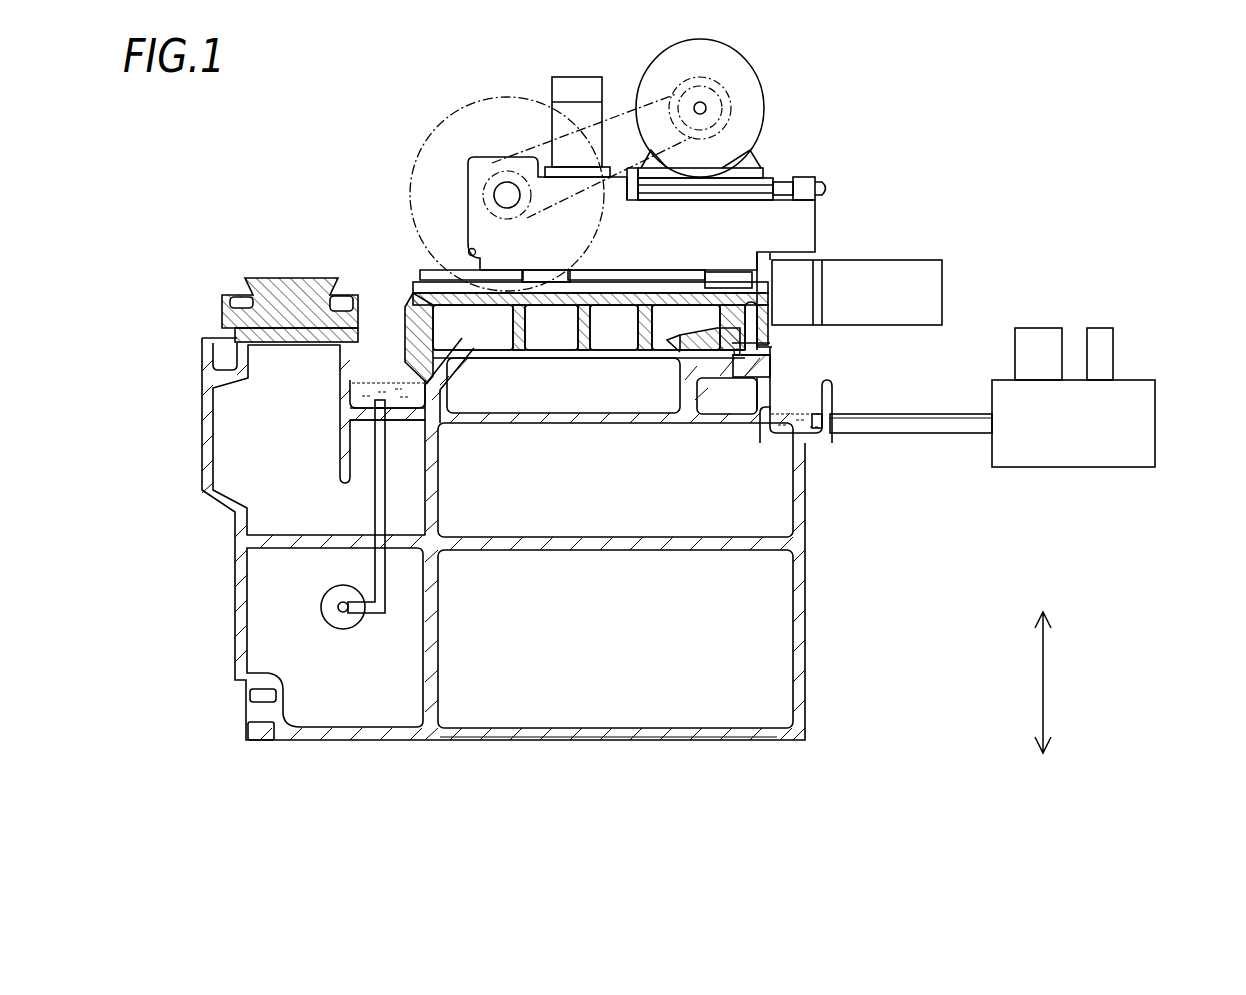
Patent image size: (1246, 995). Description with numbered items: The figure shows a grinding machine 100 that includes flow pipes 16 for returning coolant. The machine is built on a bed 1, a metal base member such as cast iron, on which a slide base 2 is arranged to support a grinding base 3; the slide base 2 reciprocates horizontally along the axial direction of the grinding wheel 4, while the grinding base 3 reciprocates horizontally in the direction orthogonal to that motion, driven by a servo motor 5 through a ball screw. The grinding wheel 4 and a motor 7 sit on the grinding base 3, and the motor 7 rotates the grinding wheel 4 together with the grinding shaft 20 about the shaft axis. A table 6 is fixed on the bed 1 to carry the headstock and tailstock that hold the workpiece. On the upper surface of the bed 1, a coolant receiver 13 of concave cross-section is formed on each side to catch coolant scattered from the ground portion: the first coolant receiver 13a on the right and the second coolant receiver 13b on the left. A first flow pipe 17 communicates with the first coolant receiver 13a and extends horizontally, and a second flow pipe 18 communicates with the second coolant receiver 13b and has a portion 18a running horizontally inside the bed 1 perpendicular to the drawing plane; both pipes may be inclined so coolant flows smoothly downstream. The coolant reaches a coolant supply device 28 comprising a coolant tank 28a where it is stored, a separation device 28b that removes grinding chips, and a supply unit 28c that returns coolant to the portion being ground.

The grinding machine 100 is at (925, 97).
The bed 1 is at (838, 574).
The slide base 2 is at (402, 322).
The grinding base 3 is at (806, 220).
The grinding wheel 4 is at (512, 95).
The servo motor 5 is at (900, 265).
The table 6 is at (222, 303).
The motor 7 is at (764, 112).
The coolant receiver 13 is at (570, 386).
The first coolant receiver 13a is at (800, 407).
The second coolant receiver 13b is at (372, 378).
The flow pipe 16 is at (637, 510).
The first flow pipe 17 is at (873, 435).
The second flow pipe 18 is at (368, 509).
The portion 18a is at (343, 613).
The grinding shaft 20 is at (493, 195).
The coolant supply device 28 is at (1176, 488).
The coolant tank 28a is at (1076, 468).
The separation device 28b is at (1037, 327).
The supply unit 28c is at (1113, 345).